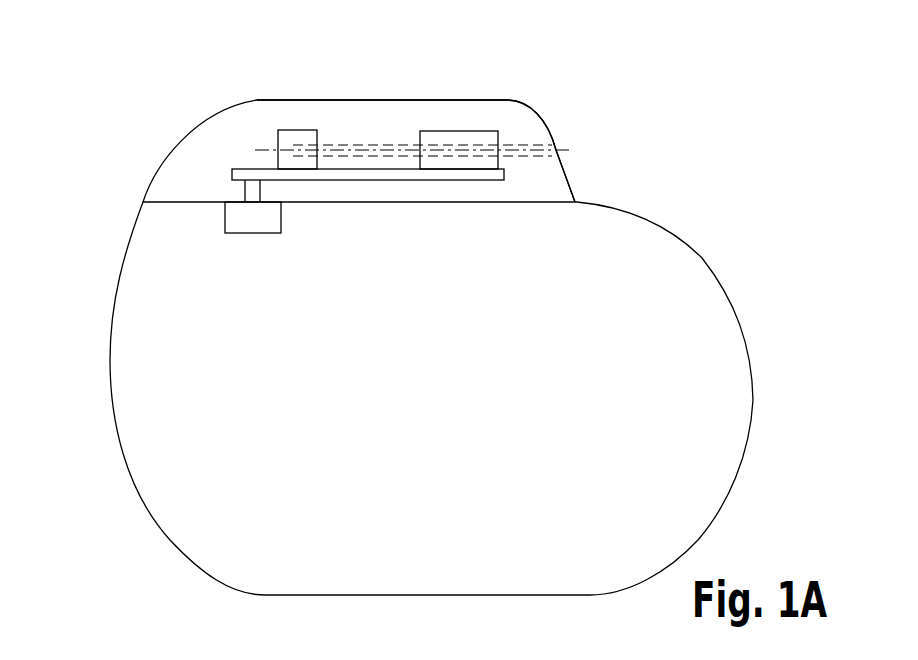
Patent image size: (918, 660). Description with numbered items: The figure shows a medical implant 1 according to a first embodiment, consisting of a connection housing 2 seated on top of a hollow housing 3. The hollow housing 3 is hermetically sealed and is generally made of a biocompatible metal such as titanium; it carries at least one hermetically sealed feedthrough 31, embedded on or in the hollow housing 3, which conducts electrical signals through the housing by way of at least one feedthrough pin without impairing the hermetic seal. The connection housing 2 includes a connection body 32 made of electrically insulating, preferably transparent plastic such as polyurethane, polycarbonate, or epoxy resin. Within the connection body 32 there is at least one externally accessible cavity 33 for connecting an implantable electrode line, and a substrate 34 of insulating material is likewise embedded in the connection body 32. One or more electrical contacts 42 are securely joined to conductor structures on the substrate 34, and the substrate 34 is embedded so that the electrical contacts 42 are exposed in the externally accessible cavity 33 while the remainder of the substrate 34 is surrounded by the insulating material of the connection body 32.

The medical implant 1 is at (112, 90).
The connection housing 2 is at (360, 100).
The hollow housing 3 is at (135, 357).
The hermetically sealed feedthrough 31 is at (253, 223).
The connection body 32 is at (213, 145).
The externally accessible cavity 33 is at (552, 142).
The substrate 34 is at (375, 175).
The electrical contacts 42 is at (297, 138).